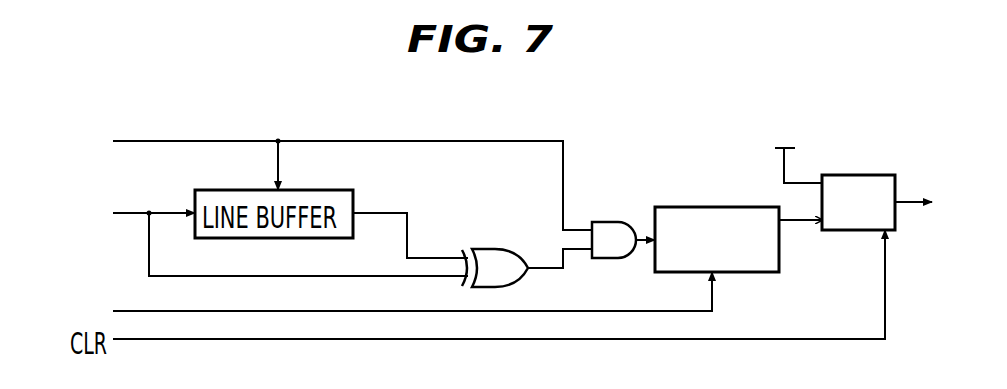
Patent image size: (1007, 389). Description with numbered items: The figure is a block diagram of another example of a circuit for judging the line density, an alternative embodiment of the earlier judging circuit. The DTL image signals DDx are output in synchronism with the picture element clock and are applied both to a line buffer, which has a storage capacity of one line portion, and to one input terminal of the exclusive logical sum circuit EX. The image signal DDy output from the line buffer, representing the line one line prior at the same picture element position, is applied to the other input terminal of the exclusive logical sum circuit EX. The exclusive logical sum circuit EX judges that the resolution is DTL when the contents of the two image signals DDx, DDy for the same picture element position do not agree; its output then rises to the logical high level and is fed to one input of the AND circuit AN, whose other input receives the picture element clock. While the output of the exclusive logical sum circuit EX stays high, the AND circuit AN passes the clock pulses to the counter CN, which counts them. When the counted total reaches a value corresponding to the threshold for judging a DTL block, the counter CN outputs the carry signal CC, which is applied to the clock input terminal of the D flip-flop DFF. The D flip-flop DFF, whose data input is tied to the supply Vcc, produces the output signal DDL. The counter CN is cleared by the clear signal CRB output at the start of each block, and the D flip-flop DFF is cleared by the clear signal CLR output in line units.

The clear signal CLR is at (331, 177).
The DTL image signals DDx is at (269, 236).
The image signal DDy is at (392, 212).
The exclusive logical sum circuit EX is at (493, 247).
The AND circuit AN is at (610, 221).
The counter CN is at (692, 207).
The carry signal CC is at (788, 223).
The D flip-flop DFF is at (855, 174).
The supply voltage Vcc is at (779, 154).
The output data signal DDL is at (936, 202).
The clear signal CRB is at (391, 298).